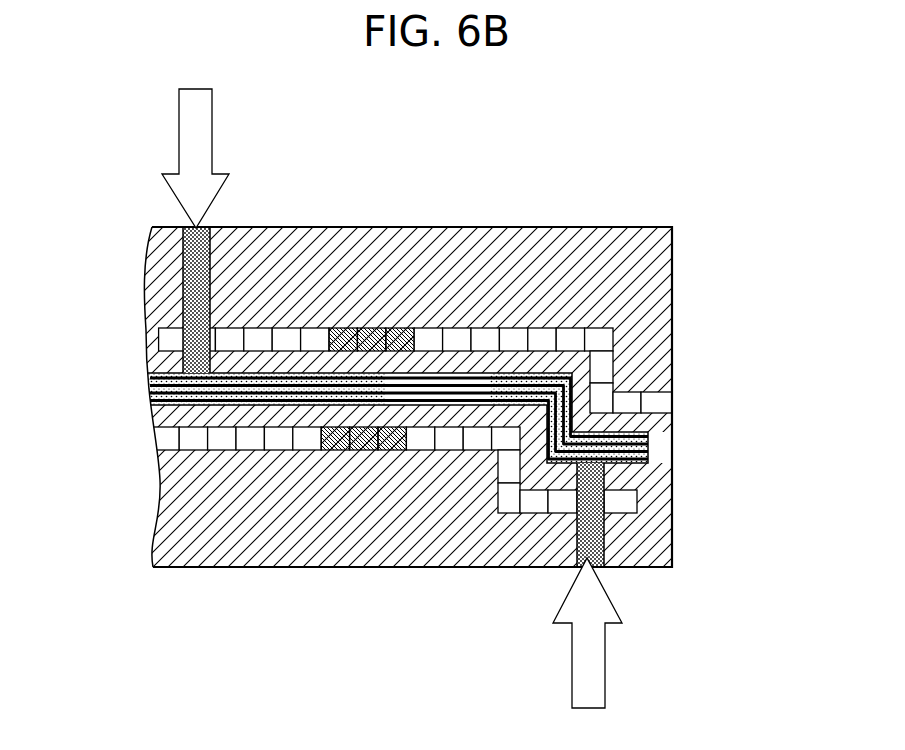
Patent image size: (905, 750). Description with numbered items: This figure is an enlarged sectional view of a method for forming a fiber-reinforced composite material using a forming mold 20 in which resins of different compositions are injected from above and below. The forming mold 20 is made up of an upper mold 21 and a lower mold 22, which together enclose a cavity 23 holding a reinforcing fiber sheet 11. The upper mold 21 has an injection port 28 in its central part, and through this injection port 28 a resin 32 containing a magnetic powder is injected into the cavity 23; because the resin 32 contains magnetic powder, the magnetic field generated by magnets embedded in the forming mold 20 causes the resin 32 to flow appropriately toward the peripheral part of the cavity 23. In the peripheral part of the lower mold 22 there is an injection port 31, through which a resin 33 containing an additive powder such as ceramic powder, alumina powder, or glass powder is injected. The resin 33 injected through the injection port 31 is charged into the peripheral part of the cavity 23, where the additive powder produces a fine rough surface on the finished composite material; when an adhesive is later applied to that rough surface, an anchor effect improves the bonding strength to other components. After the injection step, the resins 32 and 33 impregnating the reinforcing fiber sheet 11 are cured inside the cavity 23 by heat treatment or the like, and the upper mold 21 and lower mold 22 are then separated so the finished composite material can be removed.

The reinforcing fiber sheet 11 is at (455, 385).
The forming mold 20 is at (692, 172).
The upper mold 21 is at (672, 318).
The lower mold 22 is at (672, 490).
The cavity 23 is at (648, 457).
The injection port 28 is at (187, 272).
The injection port 31 is at (605, 529).
The resin containing magnetic powder 32 is at (212, 116).
The resin containing additive powder 33 is at (572, 676).